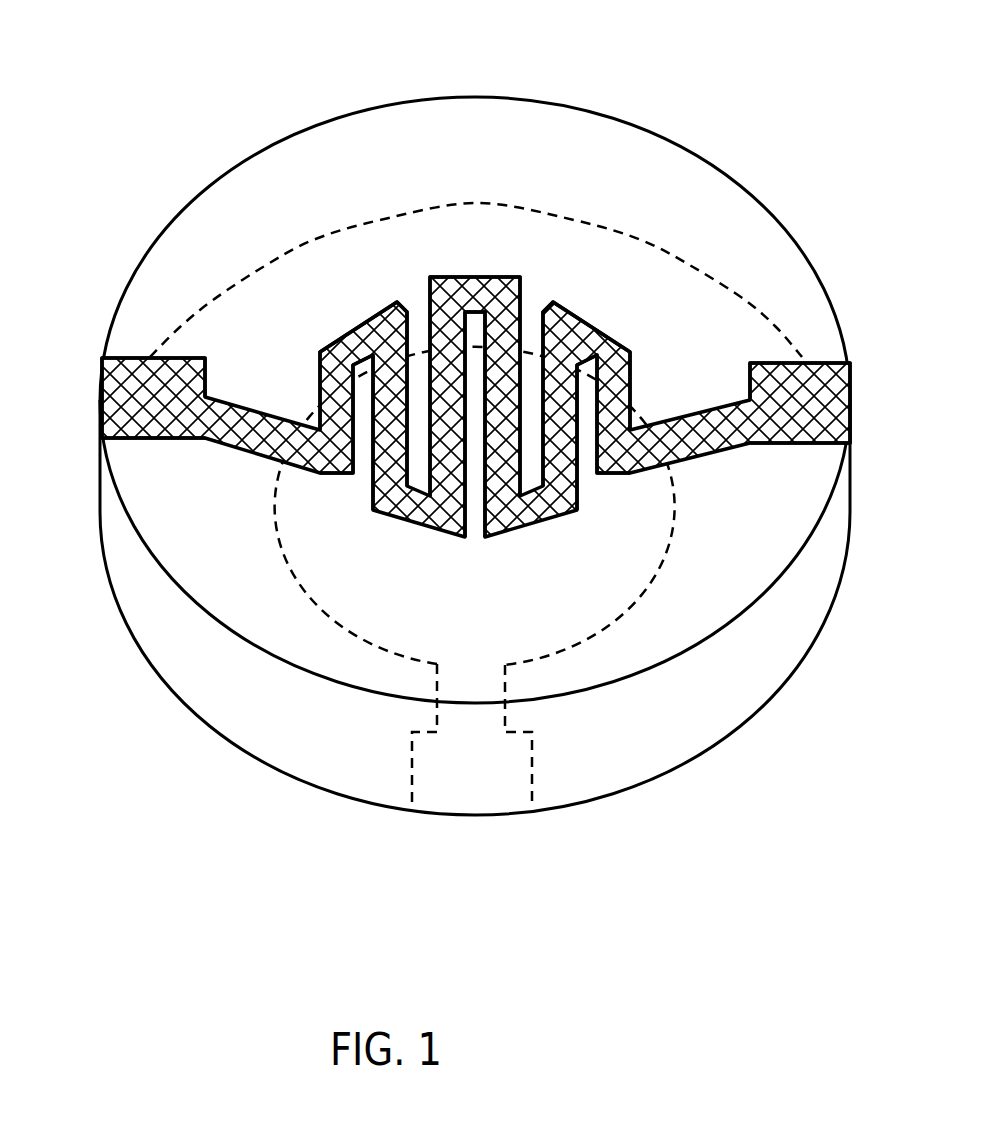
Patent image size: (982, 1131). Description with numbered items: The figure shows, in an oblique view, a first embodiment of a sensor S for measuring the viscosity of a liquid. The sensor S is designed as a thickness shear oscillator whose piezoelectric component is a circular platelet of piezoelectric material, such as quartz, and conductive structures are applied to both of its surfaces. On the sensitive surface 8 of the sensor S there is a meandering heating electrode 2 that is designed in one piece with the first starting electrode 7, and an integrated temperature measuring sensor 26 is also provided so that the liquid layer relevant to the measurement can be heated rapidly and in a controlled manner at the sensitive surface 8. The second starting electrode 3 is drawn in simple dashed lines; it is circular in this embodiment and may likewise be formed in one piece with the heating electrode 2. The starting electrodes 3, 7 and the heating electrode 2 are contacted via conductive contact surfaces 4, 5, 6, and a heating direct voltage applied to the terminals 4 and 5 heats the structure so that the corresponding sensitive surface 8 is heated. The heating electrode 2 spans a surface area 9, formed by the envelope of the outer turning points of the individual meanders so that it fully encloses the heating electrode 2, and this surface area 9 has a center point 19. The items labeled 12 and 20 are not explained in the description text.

The sensor S is at (469, 467).
The heating electrode 2 is at (469, 425).
The first starting electrode 7 is at (469, 425).
The temperature measuring sensor 26 is at (469, 425).
The second starting electrode 3 is at (588, 640).
The conductive contact surface 4 is at (797, 400).
The conductive contact surface 5 is at (170, 397).
The conductive contact surface 6 is at (497, 780).
The sensitive surface 8 is at (767, 273).
The surface area 9 is at (367, 460).
The fold 12 is at (597, 320).
The center point 19 is at (473, 400).
The recess 20 is at (357, 660).